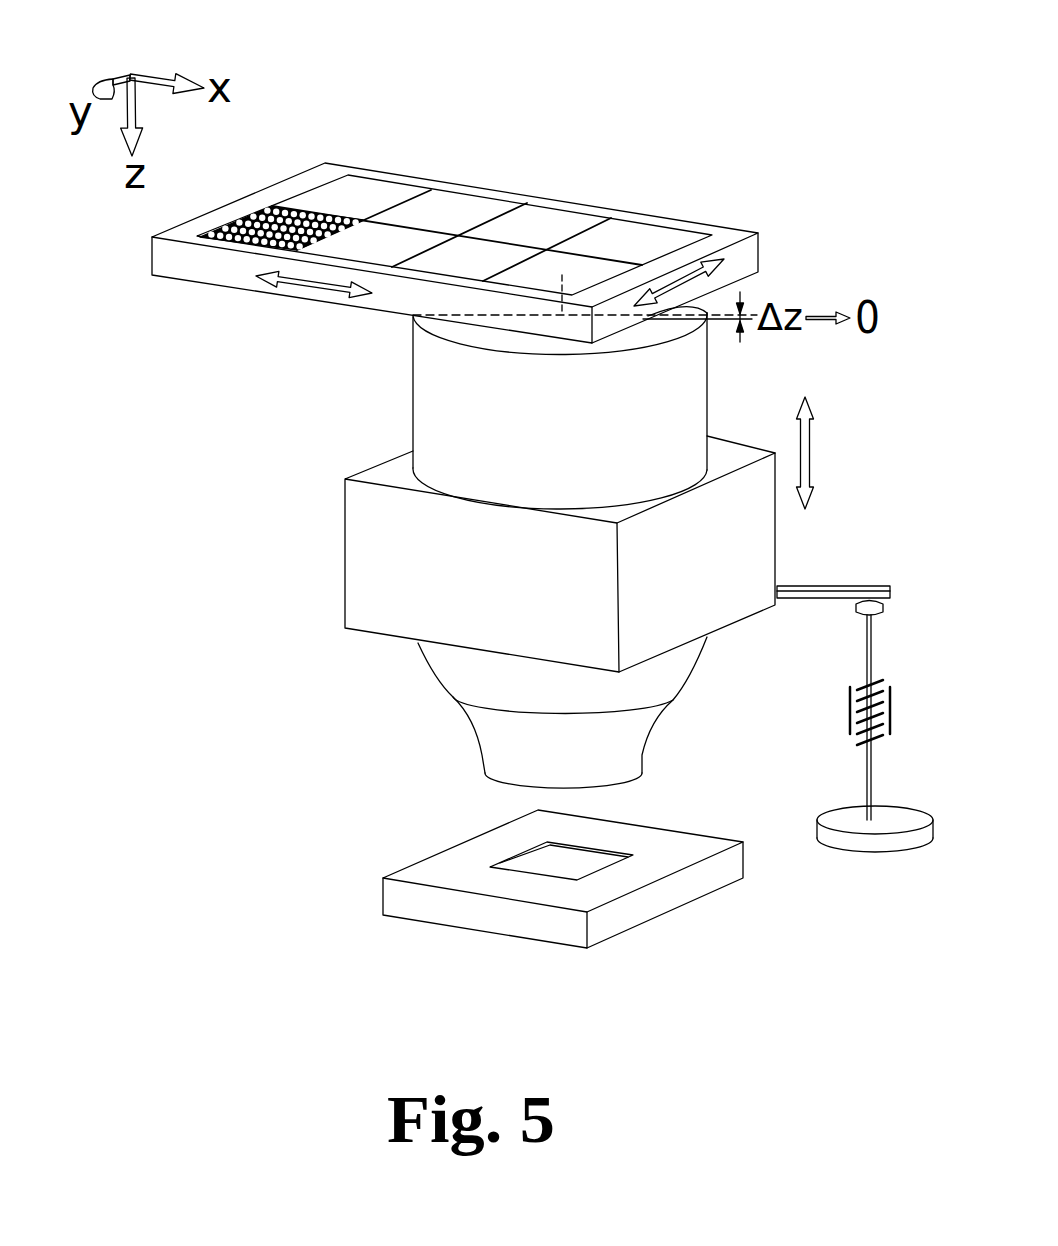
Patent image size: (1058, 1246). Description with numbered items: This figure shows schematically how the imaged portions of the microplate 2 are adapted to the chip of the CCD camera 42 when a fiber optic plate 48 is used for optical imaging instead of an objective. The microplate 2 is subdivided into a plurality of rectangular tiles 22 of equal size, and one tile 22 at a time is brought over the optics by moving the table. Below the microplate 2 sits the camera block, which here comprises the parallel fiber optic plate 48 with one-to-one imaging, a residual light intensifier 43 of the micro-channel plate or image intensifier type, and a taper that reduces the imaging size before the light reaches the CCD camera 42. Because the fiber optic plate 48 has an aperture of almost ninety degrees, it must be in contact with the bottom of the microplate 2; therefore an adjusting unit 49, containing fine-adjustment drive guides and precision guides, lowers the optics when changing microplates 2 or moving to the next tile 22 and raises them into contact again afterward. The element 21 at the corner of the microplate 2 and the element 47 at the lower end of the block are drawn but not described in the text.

The microplate 2 is at (759, 232).
The spot array 21 is at (318, 213).
The tiles 22 is at (617, 230).
The fiber optic plate 48 is at (443, 400).
The residual light intensifier 43 is at (383, 567).
The objective 47 is at (462, 688).
The CCD camera 42 is at (406, 903).
The adjusting unit 49 is at (824, 586).